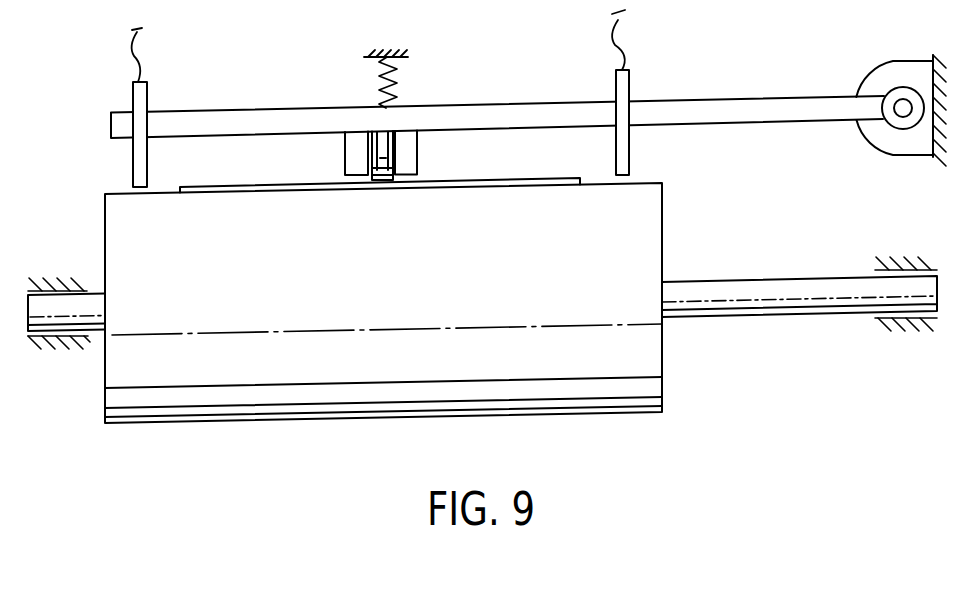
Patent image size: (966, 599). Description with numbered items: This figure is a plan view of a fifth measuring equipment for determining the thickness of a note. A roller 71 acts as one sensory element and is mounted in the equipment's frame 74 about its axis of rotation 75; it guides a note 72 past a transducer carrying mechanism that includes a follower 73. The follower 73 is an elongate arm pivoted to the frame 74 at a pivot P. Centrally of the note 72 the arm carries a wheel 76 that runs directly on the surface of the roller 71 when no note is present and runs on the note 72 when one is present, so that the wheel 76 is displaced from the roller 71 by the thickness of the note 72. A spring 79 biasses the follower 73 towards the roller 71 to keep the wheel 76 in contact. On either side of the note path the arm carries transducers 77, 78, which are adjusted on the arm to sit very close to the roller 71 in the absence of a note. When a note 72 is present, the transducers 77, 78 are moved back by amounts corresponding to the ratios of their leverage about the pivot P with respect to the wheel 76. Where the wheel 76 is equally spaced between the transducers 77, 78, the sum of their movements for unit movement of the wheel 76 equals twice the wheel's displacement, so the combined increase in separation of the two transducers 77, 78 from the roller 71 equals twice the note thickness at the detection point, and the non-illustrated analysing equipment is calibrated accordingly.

The roller 71 is at (312, 423).
The note 72 is at (317, 191).
The follower 73 is at (282, 122).
The frame 74 is at (893, 262).
The axis of rotation 75 is at (738, 306).
The wheel 76 is at (383, 140).
The transducer 77 is at (133, 172).
The transducer 78 is at (630, 157).
The spring 79 is at (378, 90).
The pivot P is at (900, 104).